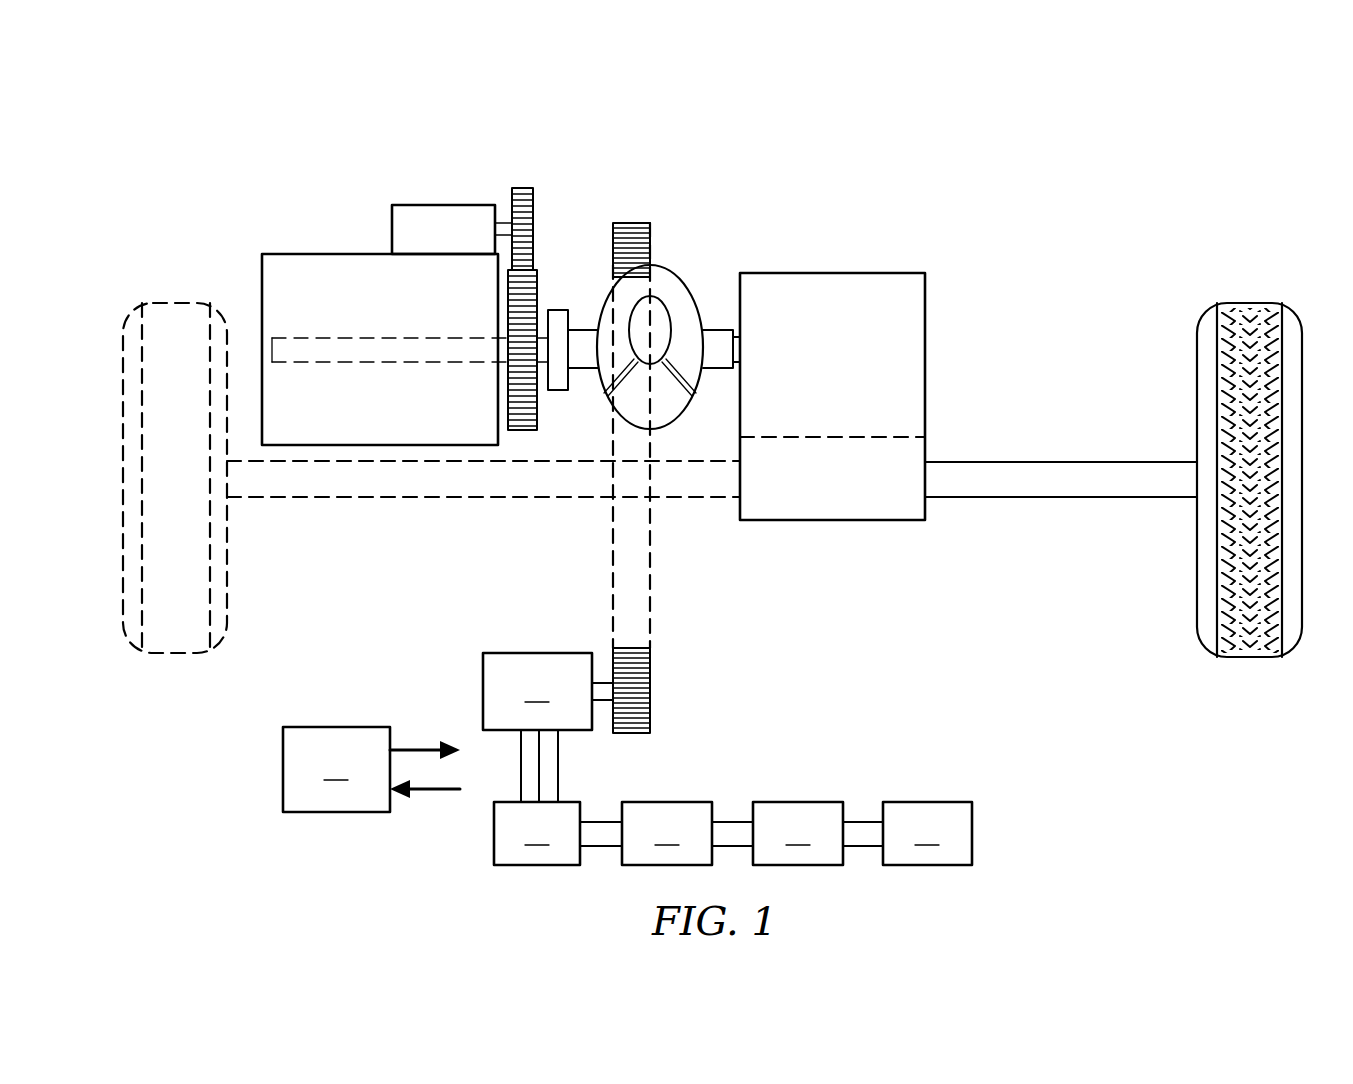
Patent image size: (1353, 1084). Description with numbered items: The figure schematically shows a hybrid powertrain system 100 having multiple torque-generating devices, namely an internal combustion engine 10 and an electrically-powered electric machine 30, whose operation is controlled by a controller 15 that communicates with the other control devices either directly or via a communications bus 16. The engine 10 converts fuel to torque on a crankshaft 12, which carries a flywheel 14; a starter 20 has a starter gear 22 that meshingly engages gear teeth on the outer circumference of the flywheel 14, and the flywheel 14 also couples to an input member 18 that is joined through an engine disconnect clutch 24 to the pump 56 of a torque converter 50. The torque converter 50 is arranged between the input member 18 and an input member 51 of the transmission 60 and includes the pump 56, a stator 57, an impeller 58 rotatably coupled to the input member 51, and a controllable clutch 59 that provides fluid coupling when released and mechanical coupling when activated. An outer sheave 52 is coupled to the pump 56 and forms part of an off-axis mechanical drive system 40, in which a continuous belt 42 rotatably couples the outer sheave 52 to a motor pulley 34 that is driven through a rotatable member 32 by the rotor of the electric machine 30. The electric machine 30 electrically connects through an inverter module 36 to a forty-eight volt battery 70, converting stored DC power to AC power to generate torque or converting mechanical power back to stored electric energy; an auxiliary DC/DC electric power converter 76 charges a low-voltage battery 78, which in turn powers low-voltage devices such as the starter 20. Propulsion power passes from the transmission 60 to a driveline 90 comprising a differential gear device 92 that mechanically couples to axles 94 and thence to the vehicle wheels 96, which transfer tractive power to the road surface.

The hybrid powertrain system 100 is at (824, 152).
The internal combustion engine 10 is at (303, 243).
The crankshaft 12 is at (298, 338).
The flywheel 14 is at (520, 432).
The controller 15 is at (371, 769).
The communications bus 16 is at (422, 770).
The input member 18 is at (590, 390).
The starter 20 is at (412, 205).
The starter gear 22 is at (512, 205).
The engine disconnect clutch 24 is at (560, 310).
The electric machine 30 is at (537, 727).
The rotatable member 32 is at (605, 683).
The motor pulley 34 is at (650, 697).
The inverter module 36 is at (558, 833).
The off-axis mechanical drive system 40 is at (750, 577).
The continuous belt 42 is at (652, 575).
The torque converter 50 is at (602, 408).
The input member 51 is at (740, 330).
The outer sheave 52 is at (650, 255).
The pump 56 is at (600, 400).
The stator 57 is at (655, 432).
The impeller 58 is at (690, 368).
The controllable clutch 59 is at (598, 300).
The transmission 60 is at (934, 328).
The 48V battery 70 is at (687, 833).
The auxiliary DC/DC electric power converter 76 is at (818, 833).
The low-voltage battery 78 is at (927, 833).
The driveline 90 is at (934, 428).
The differential gear device 92 is at (932, 437).
The axle 94 is at (403, 500).
The wheel 96 is at (175, 640).